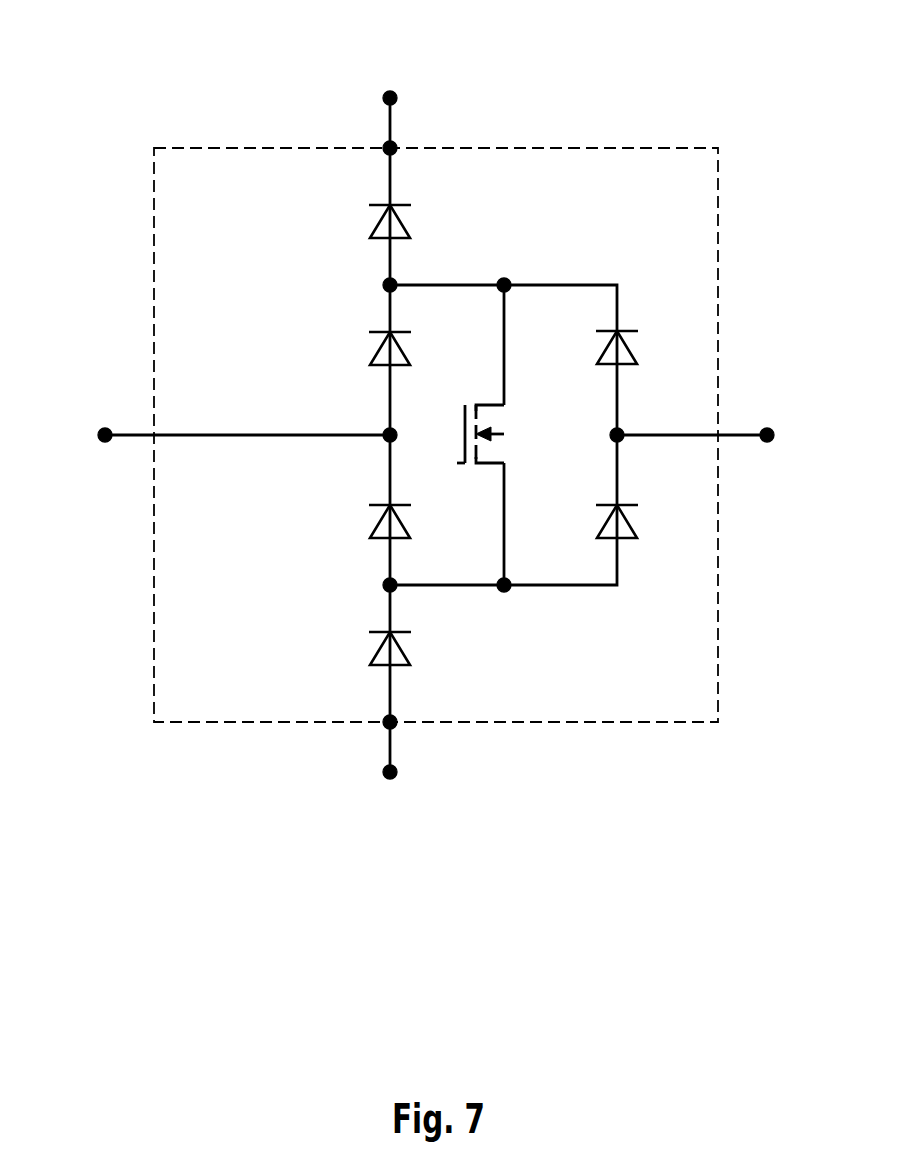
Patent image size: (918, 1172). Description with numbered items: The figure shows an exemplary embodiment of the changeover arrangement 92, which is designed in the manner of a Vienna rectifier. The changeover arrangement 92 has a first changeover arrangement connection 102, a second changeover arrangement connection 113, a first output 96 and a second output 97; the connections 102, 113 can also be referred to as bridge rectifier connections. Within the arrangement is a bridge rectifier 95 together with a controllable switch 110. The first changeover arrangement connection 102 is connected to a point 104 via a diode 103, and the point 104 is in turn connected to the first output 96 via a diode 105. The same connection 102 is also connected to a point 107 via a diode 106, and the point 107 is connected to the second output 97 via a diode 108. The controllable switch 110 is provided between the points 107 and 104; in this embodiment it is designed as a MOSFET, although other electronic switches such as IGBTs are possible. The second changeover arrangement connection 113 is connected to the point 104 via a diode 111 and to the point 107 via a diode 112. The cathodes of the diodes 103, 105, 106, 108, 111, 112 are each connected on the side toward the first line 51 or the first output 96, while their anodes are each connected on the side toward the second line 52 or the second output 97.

The first line 51 is at (392, 92).
The second line 52 is at (392, 780).
The changeover arrangement 92 is at (718, 210).
The bridge rectifier 95 is at (446, 272).
The first output 96 is at (395, 146).
The second output 97 is at (396, 726).
The first changeover arrangement connection 102 is at (384, 434).
The diode 103 is at (379, 349).
The point 104 is at (384, 285).
The diode 105 is at (379, 222).
The diode 106 is at (379, 522).
The point 107 is at (384, 585).
The diode 108 is at (379, 649).
The controllable switch 110 is at (474, 467).
The diode 111 is at (608, 349).
The diode 112 is at (608, 523).
The second changeover arrangement connection 113 is at (616, 433).